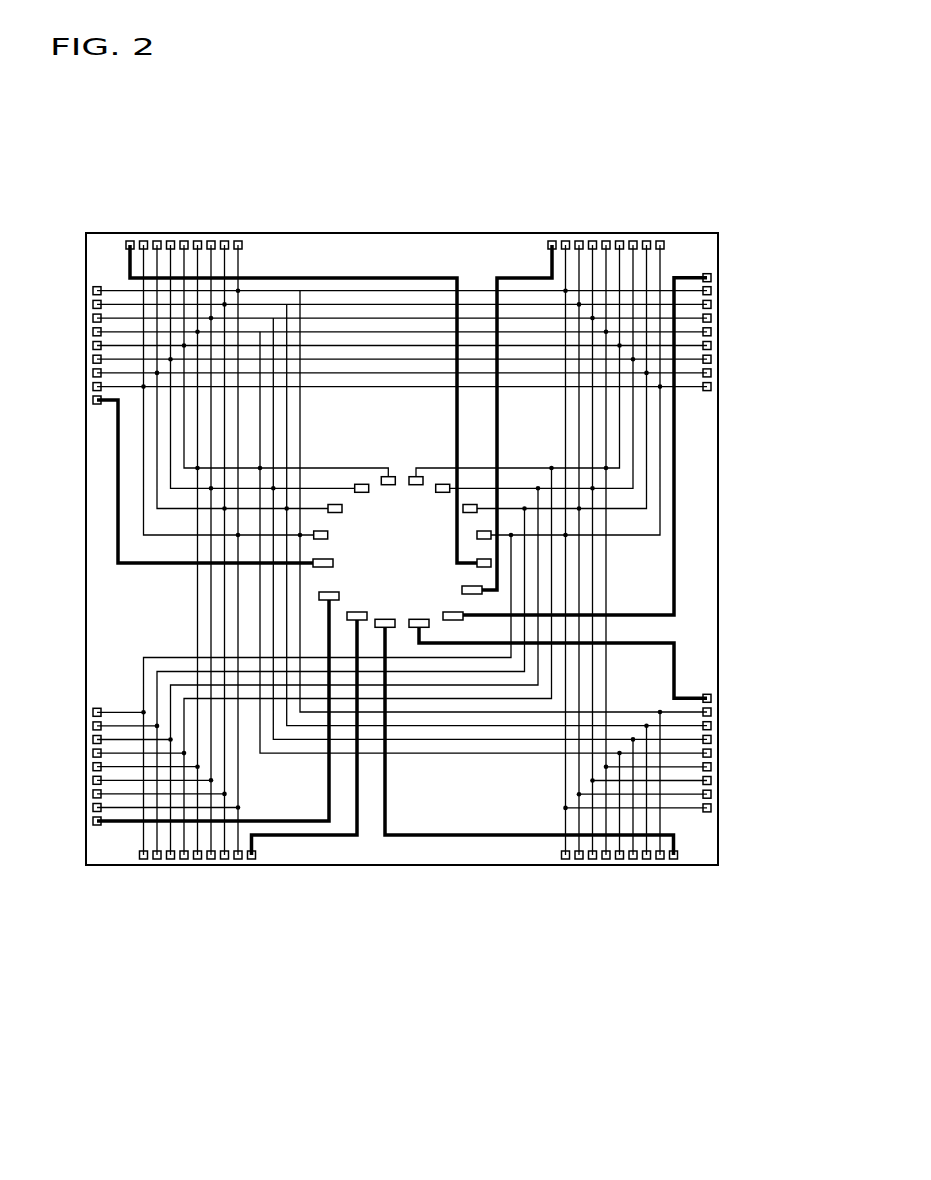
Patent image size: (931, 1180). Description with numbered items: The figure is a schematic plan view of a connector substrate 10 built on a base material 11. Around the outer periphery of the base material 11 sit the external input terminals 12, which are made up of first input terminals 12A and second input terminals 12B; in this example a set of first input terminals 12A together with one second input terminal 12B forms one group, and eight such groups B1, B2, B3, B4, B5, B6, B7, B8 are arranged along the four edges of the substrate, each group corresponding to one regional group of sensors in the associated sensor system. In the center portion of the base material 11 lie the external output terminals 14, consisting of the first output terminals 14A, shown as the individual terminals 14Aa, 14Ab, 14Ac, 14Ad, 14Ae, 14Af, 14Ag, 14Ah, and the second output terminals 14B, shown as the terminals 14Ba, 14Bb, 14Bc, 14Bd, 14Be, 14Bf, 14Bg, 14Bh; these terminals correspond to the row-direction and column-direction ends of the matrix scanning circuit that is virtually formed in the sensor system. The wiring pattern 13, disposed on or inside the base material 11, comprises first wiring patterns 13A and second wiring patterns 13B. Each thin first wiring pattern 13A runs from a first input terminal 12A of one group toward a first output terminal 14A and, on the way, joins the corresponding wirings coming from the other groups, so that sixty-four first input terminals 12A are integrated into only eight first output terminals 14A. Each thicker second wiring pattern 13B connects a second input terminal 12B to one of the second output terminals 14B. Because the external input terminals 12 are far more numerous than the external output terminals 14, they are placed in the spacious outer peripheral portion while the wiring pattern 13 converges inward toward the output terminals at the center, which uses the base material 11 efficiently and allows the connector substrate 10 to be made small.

The connector substrate 10 is at (707, 168).
The base material 11 is at (140, 608).
The external input terminal 12 is at (778, 230).
The first input terminal 12A is at (712, 291).
The second input terminal 12B is at (712, 277).
The wiring pattern 13 is at (785, 432).
The first wiring pattern 13A is at (620, 421).
The second wiring pattern 13B is at (676, 552).
The external output terminal 14 is at (406, 557).
The first output terminal 14A is at (585, 133).
The second output terminal 14B is at (592, 977).
The terminal 14Aa is at (320, 531).
The terminal 14Ab is at (335, 504).
The terminal 14Ac is at (362, 484).
The terminal 14Ad is at (388, 477).
The terminal 14Ae is at (416, 477).
The terminal 14Af is at (443, 484).
The terminal 14Ag is at (470, 504).
The terminal 14Ah is at (484, 531).
The terminal 14Ba is at (317, 567).
The terminal 14Bb is at (327, 600).
The terminal 14Bc is at (353, 620).
The terminal 14Bd is at (383, 627).
The terminal 14Be is at (417, 627).
The terminal 14Bf is at (452, 620).
The terminal 14Bg is at (472, 594).
The terminal 14Bh is at (484, 567).
The group B1 is at (772, 316).
The group B2 is at (722, 688).
The group B3 is at (677, 868).
The group B4 is at (253, 868).
The group B5 is at (84, 703).
The group B6 is at (84, 405).
The group B7 is at (243, 228).
The group B8 is at (667, 228).